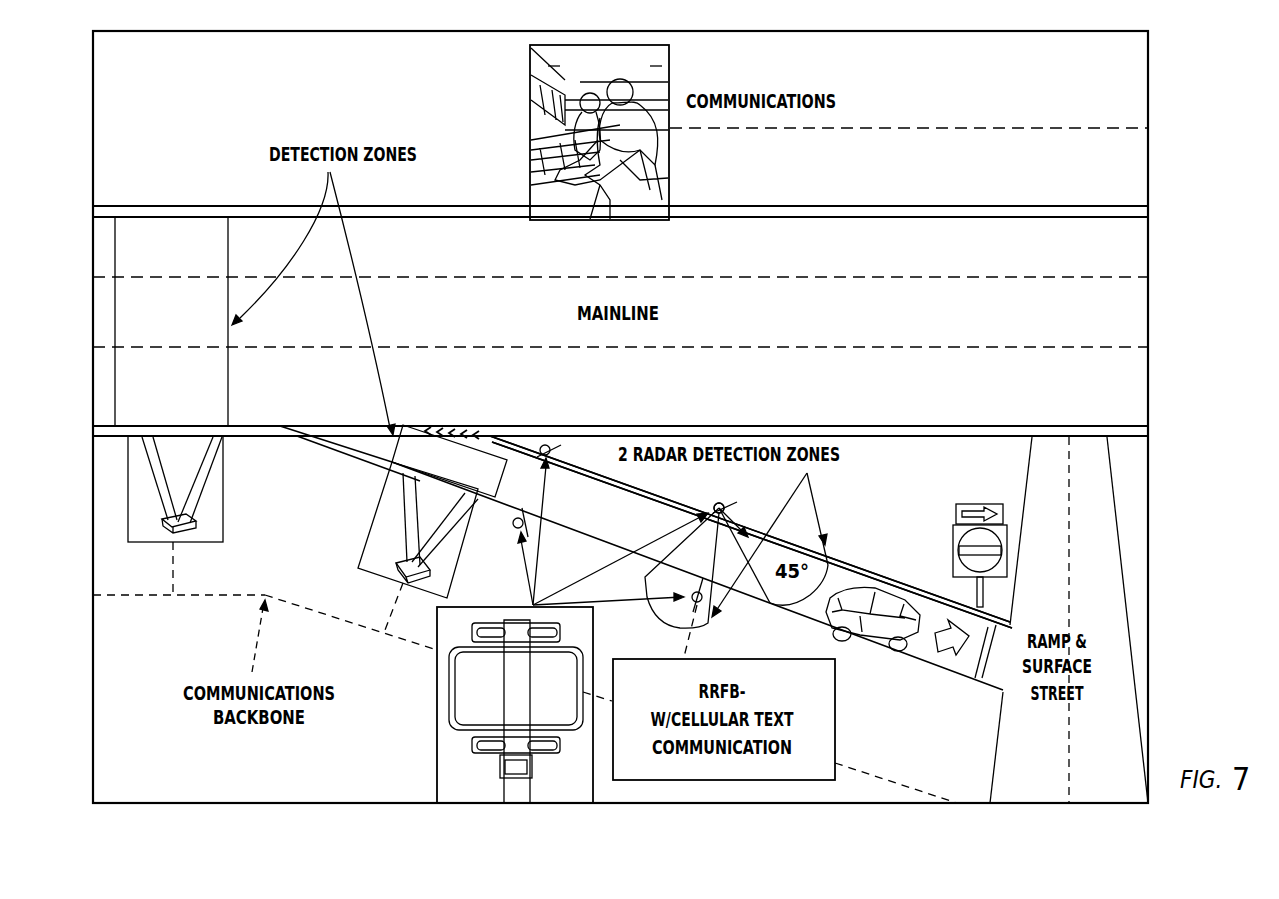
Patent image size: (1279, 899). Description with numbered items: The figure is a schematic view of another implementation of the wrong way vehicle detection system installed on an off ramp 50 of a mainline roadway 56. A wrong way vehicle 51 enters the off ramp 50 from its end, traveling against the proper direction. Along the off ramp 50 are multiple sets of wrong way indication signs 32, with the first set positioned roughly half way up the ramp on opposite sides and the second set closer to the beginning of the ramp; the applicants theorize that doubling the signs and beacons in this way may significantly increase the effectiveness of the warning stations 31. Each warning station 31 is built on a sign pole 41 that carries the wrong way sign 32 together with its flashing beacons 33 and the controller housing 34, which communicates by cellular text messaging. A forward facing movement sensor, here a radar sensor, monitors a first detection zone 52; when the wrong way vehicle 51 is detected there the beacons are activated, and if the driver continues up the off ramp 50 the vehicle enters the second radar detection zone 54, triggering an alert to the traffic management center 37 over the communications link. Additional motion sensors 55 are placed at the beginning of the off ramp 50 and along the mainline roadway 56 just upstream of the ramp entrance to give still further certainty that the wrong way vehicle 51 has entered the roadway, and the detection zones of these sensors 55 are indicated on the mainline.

The warning station 31 is at (733, 497).
The wrong way indication sign 32 is at (542, 444).
The flashing beacons 33 is at (466, 760).
The forward facing movement sensor 34 is at (526, 766).
The traffic management center 37 is at (530, 106).
The sign pole 41 is at (512, 803).
The off ramp 50 is at (578, 487).
The wrong way vehicle 51 is at (872, 587).
The first detection zone 52 is at (767, 605).
The second radar detection zone 54 is at (657, 618).
The additional motion sensors 55 is at (400, 562).
The mainline roadway 56 is at (1120, 258).